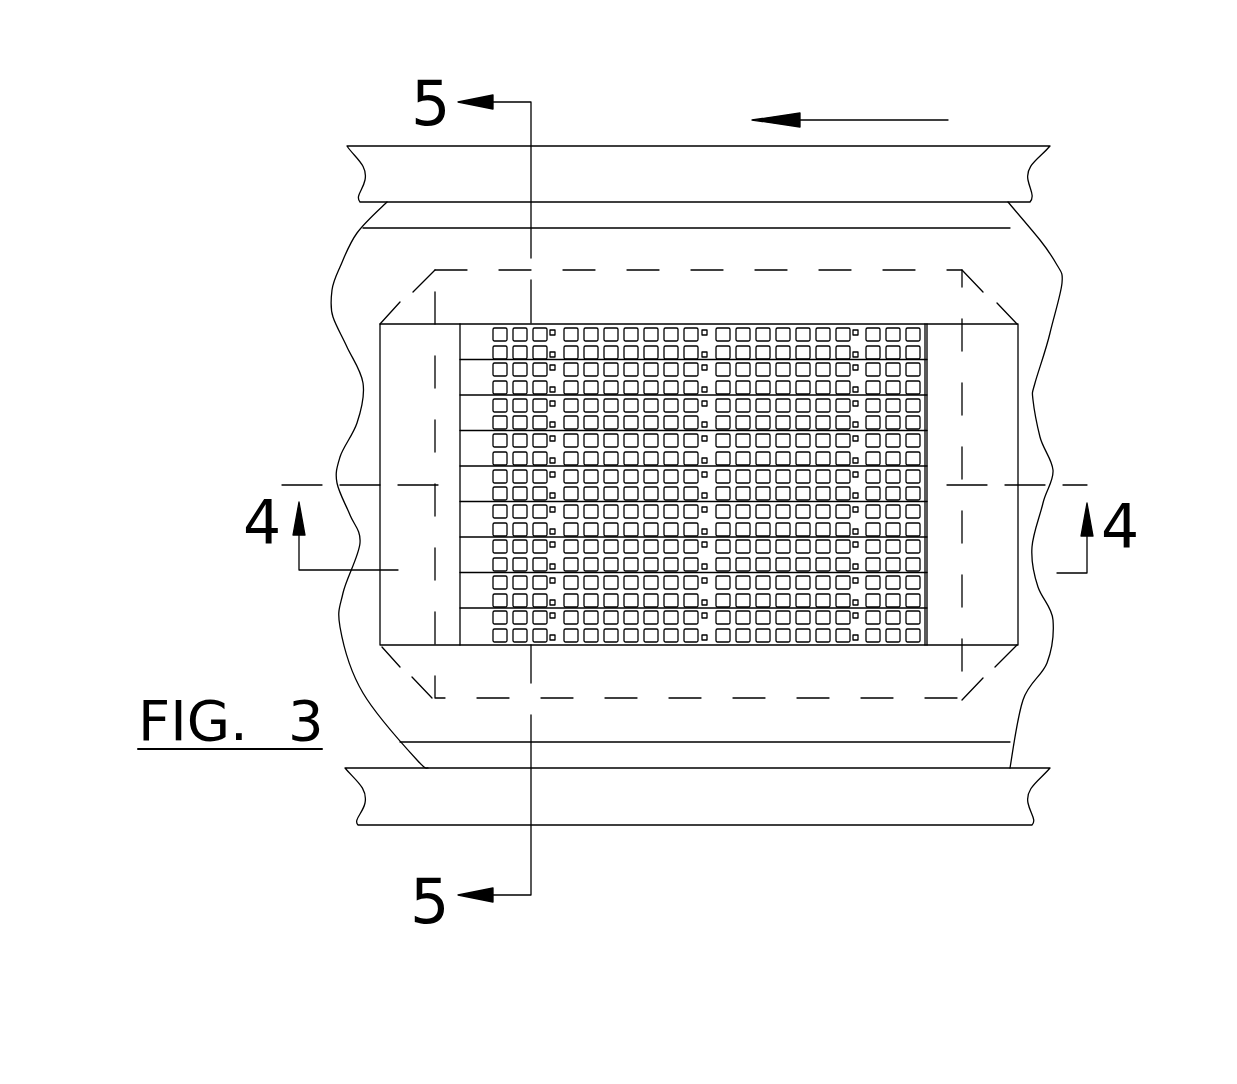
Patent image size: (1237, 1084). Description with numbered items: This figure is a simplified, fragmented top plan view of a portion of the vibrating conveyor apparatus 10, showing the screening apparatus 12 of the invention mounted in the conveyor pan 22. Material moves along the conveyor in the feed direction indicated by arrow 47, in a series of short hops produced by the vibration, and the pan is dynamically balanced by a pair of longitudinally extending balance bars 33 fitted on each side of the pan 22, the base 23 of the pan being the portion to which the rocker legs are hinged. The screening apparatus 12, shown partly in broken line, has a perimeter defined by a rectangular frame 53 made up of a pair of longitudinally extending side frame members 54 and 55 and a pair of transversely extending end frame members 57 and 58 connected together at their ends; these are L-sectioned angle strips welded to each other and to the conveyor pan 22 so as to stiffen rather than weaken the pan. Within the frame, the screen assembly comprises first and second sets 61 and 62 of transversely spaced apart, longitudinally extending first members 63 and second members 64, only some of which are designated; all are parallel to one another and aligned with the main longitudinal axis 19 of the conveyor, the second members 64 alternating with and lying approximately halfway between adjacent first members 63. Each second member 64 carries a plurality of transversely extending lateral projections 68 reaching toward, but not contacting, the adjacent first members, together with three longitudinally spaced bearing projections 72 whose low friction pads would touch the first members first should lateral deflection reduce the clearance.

The apparatus 10 is at (229, 214).
The conveyor pan 22 is at (312, 223).
The screening apparatus 12 is at (988, 252).
The main longitudinal axis 19 is at (292, 483).
The base of the pan 23 is at (1025, 370).
The balance bars 33 is at (1027, 173).
The feed direction arrow 47 is at (868, 120).
The rectangular frame 53 is at (1060, 273).
The side frame member 54 is at (676, 283).
The side frame member 55 is at (632, 662).
The end frame member 57 is at (997, 420).
The end frame member 58 is at (408, 354).
The first set 61 is at (829, 463).
The second set 62 is at (968, 362).
The first members 63 is at (460, 432).
The second members 64 is at (468, 623).
The lateral projections 68 is at (600, 320).
The bearing projections 72 is at (557, 322).